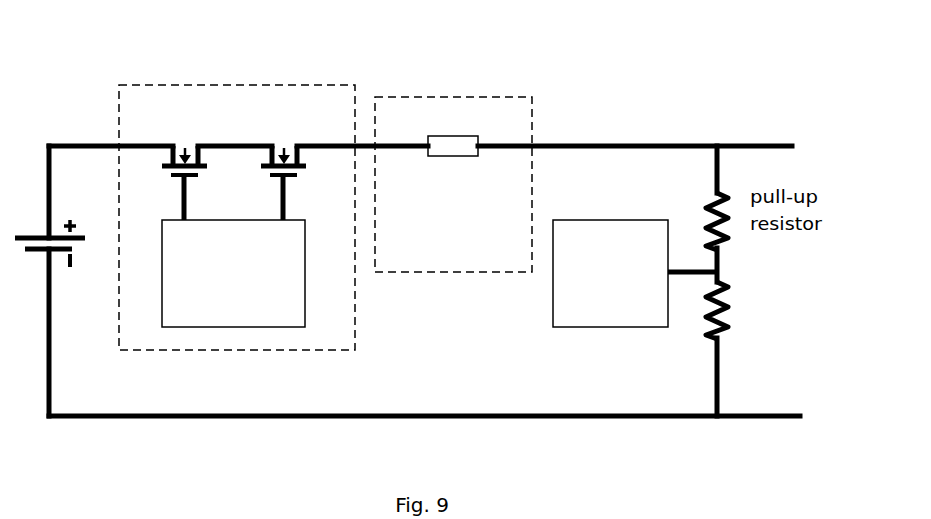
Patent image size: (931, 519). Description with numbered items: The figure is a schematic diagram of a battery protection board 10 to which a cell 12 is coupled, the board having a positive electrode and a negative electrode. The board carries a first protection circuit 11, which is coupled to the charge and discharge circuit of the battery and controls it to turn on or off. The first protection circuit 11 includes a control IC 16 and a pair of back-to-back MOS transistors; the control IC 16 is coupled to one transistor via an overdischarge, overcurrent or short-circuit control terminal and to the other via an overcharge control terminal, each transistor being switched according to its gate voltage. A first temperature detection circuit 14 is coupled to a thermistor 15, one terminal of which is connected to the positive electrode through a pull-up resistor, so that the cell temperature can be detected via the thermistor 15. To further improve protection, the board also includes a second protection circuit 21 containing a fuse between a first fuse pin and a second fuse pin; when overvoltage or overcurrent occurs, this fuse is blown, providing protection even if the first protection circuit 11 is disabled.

The battery protection board 10 is at (686, 50).
The first protection circuit 11 is at (267, 85).
The cell 12 is at (85, 233).
The first temperature detection circuit 14 is at (672, 262).
The thermistor 15 is at (735, 333).
The control IC 16 is at (306, 262).
The second protection circuit 21 is at (487, 95).